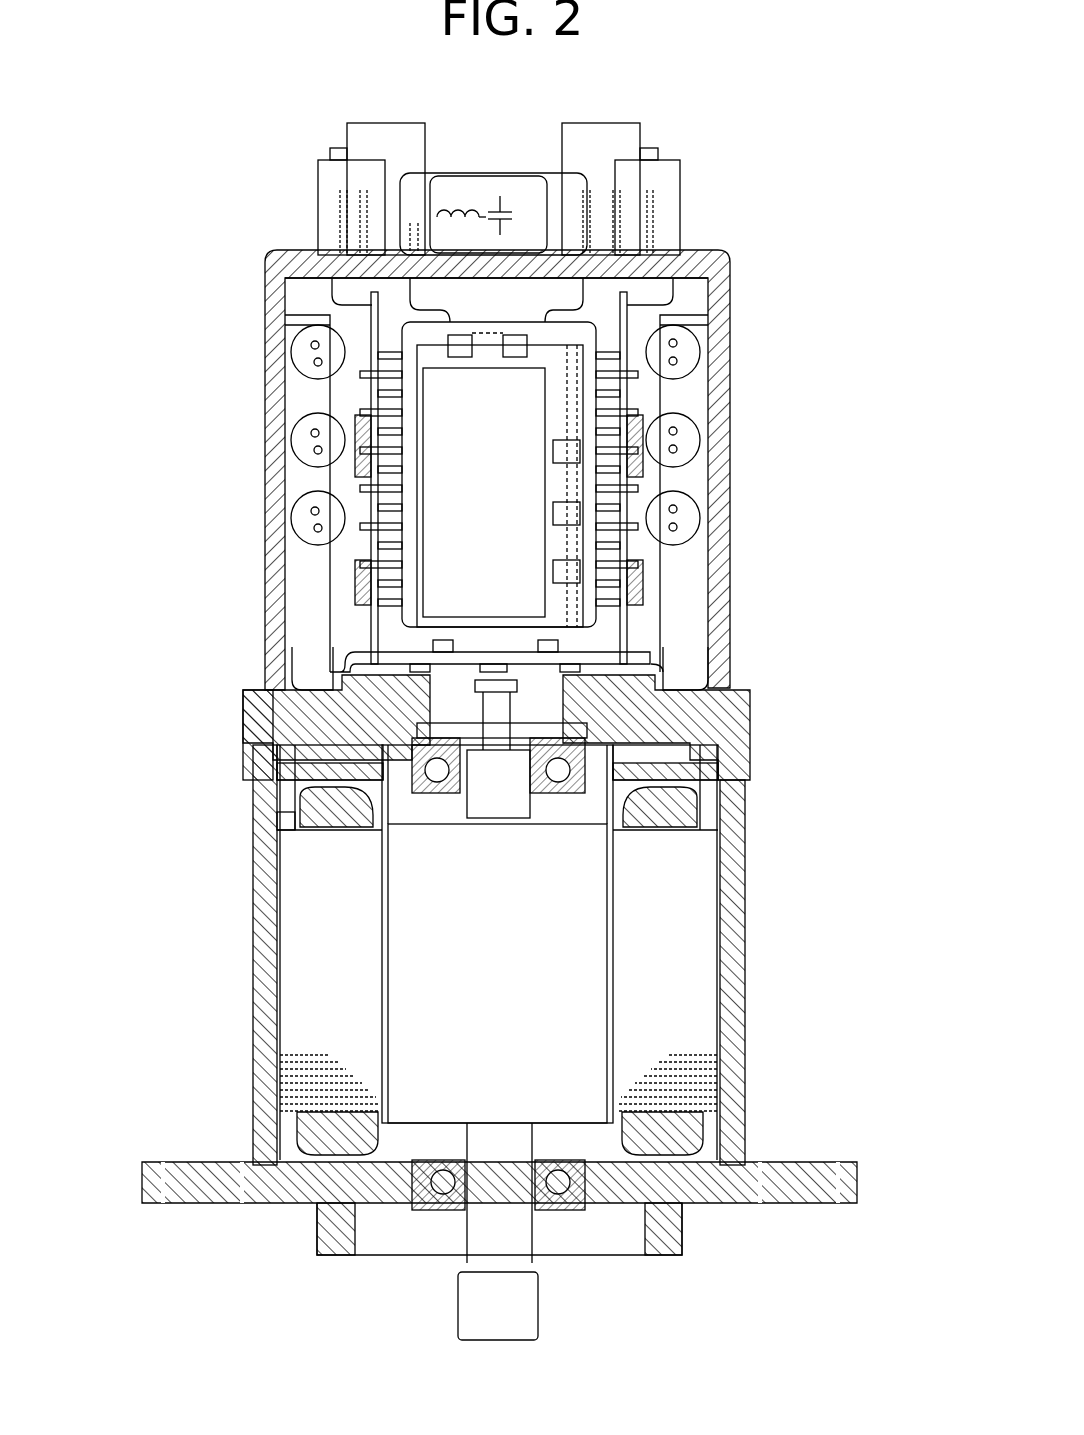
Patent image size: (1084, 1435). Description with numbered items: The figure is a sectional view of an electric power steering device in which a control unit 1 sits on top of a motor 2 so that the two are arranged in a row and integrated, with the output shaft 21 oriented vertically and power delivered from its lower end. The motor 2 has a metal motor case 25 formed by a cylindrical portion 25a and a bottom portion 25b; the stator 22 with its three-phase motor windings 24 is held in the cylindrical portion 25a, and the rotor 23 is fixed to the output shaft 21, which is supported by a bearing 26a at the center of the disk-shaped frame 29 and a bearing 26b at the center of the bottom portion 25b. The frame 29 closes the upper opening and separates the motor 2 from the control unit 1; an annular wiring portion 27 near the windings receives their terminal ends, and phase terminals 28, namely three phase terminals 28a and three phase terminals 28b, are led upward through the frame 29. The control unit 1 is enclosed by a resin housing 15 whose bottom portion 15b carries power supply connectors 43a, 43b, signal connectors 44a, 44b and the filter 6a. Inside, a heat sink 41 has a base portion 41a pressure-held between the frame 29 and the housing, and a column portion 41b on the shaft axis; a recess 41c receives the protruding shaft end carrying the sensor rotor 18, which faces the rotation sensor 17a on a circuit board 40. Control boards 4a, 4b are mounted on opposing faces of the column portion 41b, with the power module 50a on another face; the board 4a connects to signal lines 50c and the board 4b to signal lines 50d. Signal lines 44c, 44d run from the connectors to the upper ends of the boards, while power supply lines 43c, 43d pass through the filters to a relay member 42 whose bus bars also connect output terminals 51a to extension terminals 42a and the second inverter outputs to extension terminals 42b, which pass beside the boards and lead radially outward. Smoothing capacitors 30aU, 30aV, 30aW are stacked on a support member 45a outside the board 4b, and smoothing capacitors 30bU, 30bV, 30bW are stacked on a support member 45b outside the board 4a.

The control unit 1 is at (508, 439).
The motor 2 is at (506, 1043).
The control board 4a is at (479, 470).
The control board 4b is at (290, 337).
The filter 6a is at (516, 173).
The housing 15 is at (495, 686).
The bottom portion 15b is at (292, 255).
The rotation sensor 17a is at (478, 700).
The sensor rotor 18 is at (592, 1010).
The output shaft 21 is at (530, 1240).
The stator 22 is at (700, 1017).
The rotor 23 is at (382, 958).
The motor windings 24 is at (748, 870).
The motor case 25 is at (490, 1015).
The cylindrical portion 25a is at (275, 1000).
The bottom portion 25b is at (330, 1180).
The bearing 26a is at (345, 812).
The bearing 26b is at (450, 1212).
The annular wiring portion 27 is at (300, 828).
The mounting flange 28 is at (496, 727).
The phase terminals 28a is at (752, 720).
The phase terminals 28b is at (285, 690).
The frame 29 is at (747, 800).
The smoothing capacitor 30aU is at (700, 345).
The smoothing capacitor 30aV is at (700, 432).
The smoothing capacitor 30aW is at (700, 512).
The smoothing capacitor 30bU is at (292, 352).
The smoothing capacitor 30bV is at (292, 442).
The smoothing capacitor 30bW is at (292, 520).
The circuit board 40 is at (480, 492).
The heat sink 41 is at (491, 441).
The base portion 41a is at (400, 745).
The column portion 41b is at (372, 625).
The recess 41c is at (528, 700).
The relay member 42 is at (371, 392).
The extension terminals 42a is at (627, 600).
The extension terminals 42b is at (380, 655).
The power supply connector 43a is at (392, 123).
The power supply connector 43b is at (625, 123).
The power supply line 43c is at (428, 253).
The power supply line 43d is at (650, 253).
The signal connector 44a is at (330, 165).
The signal connector 44b is at (680, 165).
The signal line 44c is at (335, 300).
The signal line 44d is at (640, 240).
The support member 45a is at (700, 548).
The support member 45b is at (330, 560).
The power module 50a is at (357, 482).
The signal lines 50c is at (358, 425).
The signal lines 50d is at (641, 590).
The output terminals 51a is at (585, 505).